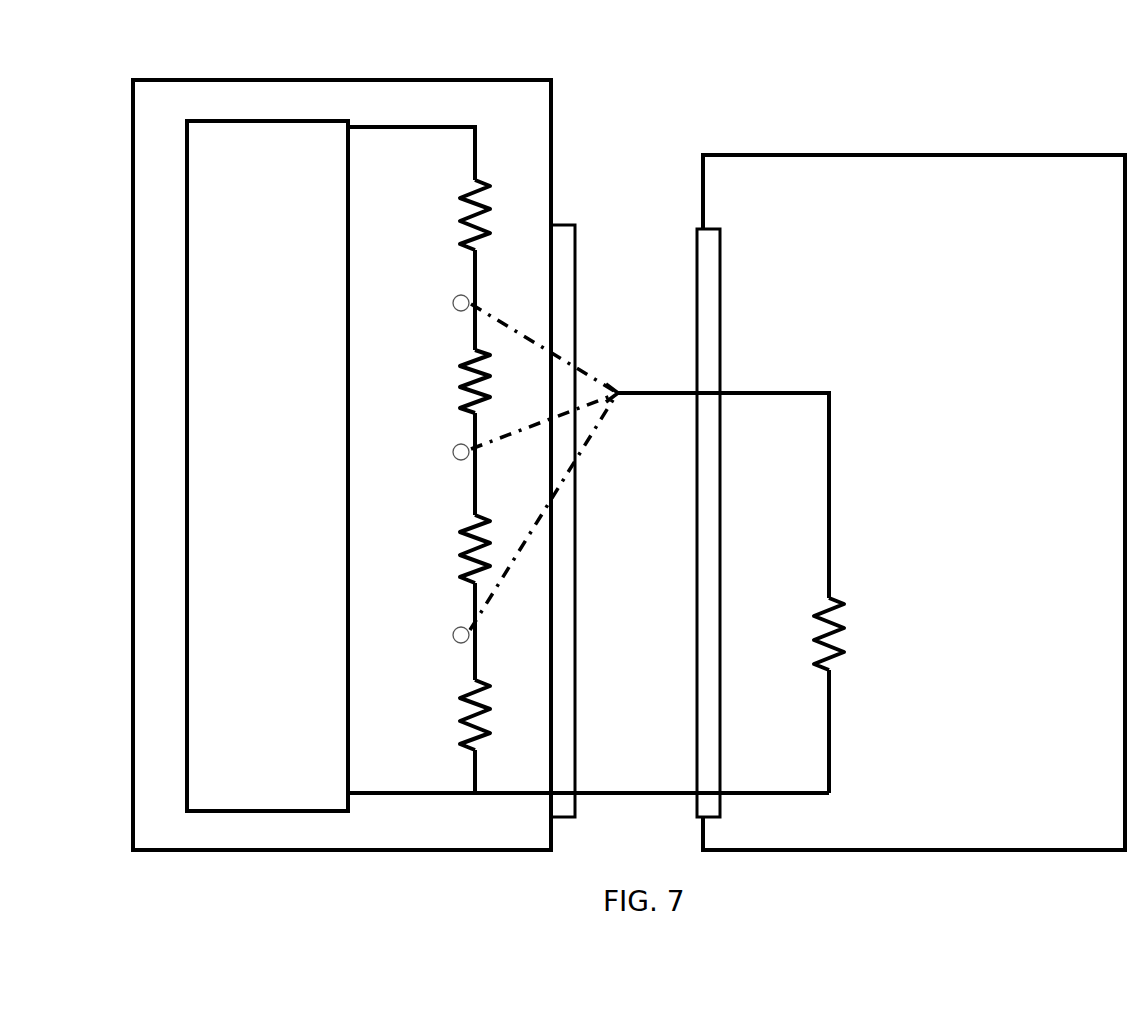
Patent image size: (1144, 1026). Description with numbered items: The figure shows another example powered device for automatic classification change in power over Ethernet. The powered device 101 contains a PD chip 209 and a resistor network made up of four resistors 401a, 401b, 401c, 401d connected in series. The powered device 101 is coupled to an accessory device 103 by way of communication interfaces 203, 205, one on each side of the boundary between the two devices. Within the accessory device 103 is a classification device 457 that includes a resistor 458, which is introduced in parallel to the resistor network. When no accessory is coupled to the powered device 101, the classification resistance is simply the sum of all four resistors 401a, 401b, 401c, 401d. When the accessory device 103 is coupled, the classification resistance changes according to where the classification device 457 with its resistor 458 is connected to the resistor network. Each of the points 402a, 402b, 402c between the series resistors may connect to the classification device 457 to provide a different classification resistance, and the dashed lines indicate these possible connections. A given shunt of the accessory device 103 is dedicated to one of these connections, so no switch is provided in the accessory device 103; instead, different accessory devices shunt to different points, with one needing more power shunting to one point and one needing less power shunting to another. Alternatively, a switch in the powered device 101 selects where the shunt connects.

The powered device 101 is at (220, 99).
The accessory device 103 is at (795, 154).
The PD chip 209 is at (288, 509).
The communication interface 203 is at (575, 232).
The communication interface 205 is at (722, 242).
The resistor 401a is at (463, 194).
The resistor 401b is at (463, 358).
The resistor 401c is at (463, 527).
The resistor 401d is at (463, 692).
The point 402a is at (460, 295).
The point 402b is at (460, 444).
The point 402c is at (462, 627).
The classification device 457 is at (607, 386).
The resistor 458 is at (815, 612).